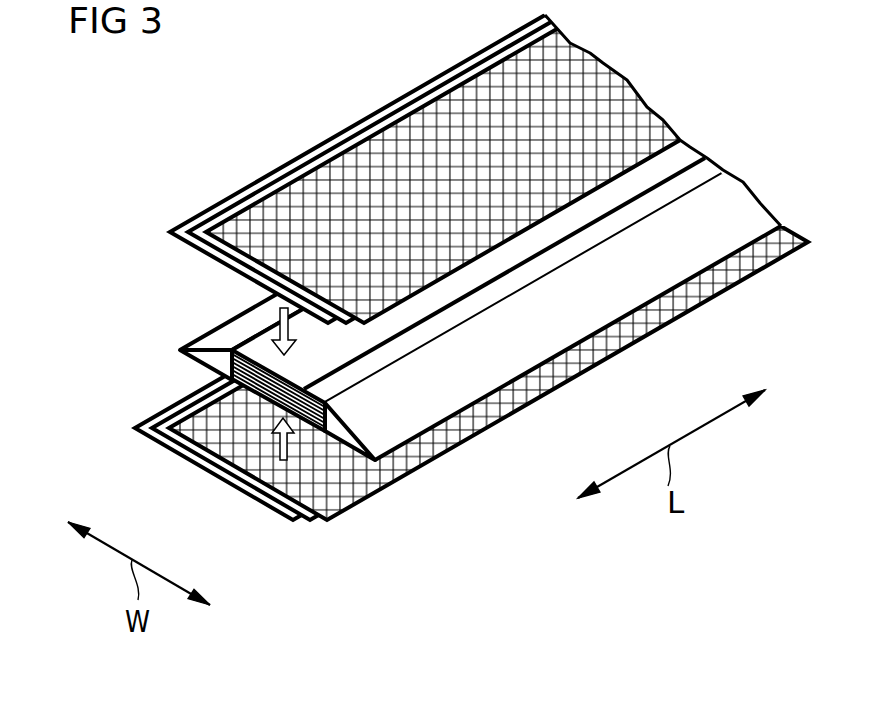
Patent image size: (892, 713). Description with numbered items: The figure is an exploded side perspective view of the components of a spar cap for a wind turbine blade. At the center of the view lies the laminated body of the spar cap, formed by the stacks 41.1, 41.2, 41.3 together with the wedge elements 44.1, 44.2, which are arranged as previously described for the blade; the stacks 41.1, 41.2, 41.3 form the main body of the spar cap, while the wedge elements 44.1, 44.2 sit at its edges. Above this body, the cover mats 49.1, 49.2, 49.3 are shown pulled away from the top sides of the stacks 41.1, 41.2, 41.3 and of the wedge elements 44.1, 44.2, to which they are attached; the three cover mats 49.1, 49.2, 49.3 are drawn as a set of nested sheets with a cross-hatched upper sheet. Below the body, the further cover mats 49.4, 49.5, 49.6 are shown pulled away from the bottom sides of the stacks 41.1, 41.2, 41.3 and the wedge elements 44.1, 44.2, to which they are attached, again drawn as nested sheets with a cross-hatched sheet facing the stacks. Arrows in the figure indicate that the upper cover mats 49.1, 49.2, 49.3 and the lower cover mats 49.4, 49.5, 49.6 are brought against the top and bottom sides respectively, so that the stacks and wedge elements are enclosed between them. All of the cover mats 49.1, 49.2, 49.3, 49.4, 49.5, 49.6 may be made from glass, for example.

The stack 41.1 is at (268, 342).
The stack 41.2 is at (497, 265).
The stack 41.3 is at (450, 337).
The wedge element 44.1 is at (220, 336).
The wedge element 44.2 is at (407, 433).
The cover mat 49.1 is at (362, 157).
The cover mat 49.2 is at (295, 177).
The cover mat 49.3 is at (232, 203).
The cover mat 49.4 is at (212, 414).
The cover mat 49.5 is at (150, 422).
The cover mat 49.6 is at (150, 436).